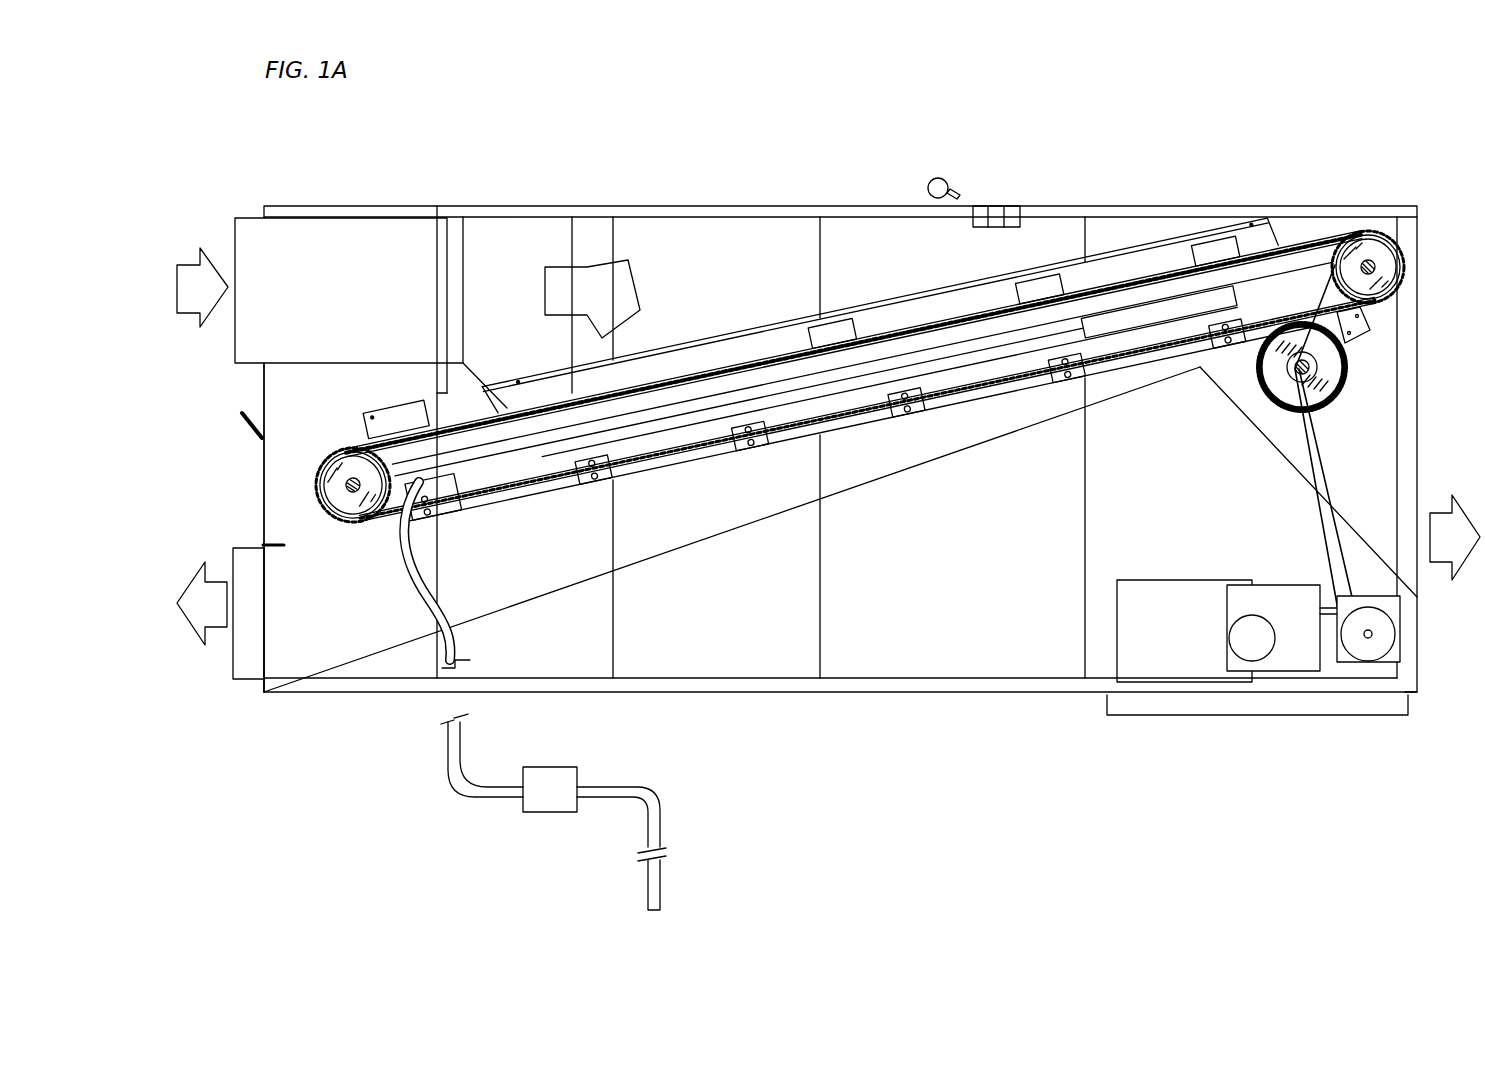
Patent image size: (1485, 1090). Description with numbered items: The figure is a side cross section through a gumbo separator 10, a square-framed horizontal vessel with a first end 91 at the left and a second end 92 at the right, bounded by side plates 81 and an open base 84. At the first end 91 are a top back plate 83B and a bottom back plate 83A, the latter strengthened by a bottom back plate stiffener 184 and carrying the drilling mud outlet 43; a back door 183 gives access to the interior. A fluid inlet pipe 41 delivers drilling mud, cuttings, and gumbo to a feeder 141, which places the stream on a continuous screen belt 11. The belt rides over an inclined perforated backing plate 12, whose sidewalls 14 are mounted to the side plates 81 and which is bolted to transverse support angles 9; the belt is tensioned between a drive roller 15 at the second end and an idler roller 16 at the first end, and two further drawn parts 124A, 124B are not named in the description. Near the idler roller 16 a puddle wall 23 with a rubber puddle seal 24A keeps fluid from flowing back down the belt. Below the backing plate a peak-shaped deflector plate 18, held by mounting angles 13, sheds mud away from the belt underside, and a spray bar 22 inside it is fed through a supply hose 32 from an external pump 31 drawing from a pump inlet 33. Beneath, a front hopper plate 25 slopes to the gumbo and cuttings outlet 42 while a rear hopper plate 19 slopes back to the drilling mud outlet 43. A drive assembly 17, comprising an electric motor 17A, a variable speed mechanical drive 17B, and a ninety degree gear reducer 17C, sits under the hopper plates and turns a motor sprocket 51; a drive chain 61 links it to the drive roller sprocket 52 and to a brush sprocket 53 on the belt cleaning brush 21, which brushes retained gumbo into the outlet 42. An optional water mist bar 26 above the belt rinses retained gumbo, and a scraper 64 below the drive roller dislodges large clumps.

The gumbo separator 10 is at (1236, 146).
The fluid inlet pipe 41 is at (312, 259).
The feeder 141 is at (507, 236).
The side plate 81 is at (720, 236).
The water mist bar 26 is at (941, 177).
The drive roller 15 is at (1362, 230).
The drive roller sprocket 52 is at (1373, 259).
The puddle wall 23 is at (445, 321).
The puddle seal 24A is at (396, 397).
The top back plate 83B is at (262, 393).
The idler roller 16 is at (341, 460).
The upper guide plate 124B is at (703, 342).
The guide plate 124A is at (780, 340).
The screen belt 11 is at (869, 326).
The sidewalls 14 is at (946, 300).
The perforated backing plate support angles 9 is at (1020, 290).
The scraper 64 is at (1365, 324).
The brush sprocket 53 is at (1243, 387).
The belt cleaning brush 21 is at (1320, 394).
The back door 183 is at (262, 491).
The drilling mud outlet 43 is at (220, 593).
The bottom back plate stiffener 184 is at (300, 561).
The bottom back plate 83A is at (264, 608).
The spray bar supply hose 32 is at (428, 588).
The spray bar 22 is at (447, 507).
The perforated backing plate 12 is at (678, 390).
The deflector plate 18 is at (782, 410).
The rear hopper plate 19 is at (732, 529).
The deflector plate mounting angles 13 is at (1054, 388).
The gumbo and cuttings outlet 42 is at (1417, 496).
The front hopper plate 25 is at (1347, 520).
The drive chain 61 is at (1315, 518).
The ninety degree gear reducer 17C is at (1302, 576).
The electric motor 17A is at (1150, 634).
The variable speed mechanical drive 17B is at (1262, 617).
The motor sprocket 51 is at (1388, 640).
The drive assembly 17 is at (1218, 715).
The second end 92 is at (1417, 742).
The first end 91 is at (261, 710).
The open base 84 is at (770, 694).
The pump 31 is at (537, 803).
The pump inlet 33 is at (625, 901).